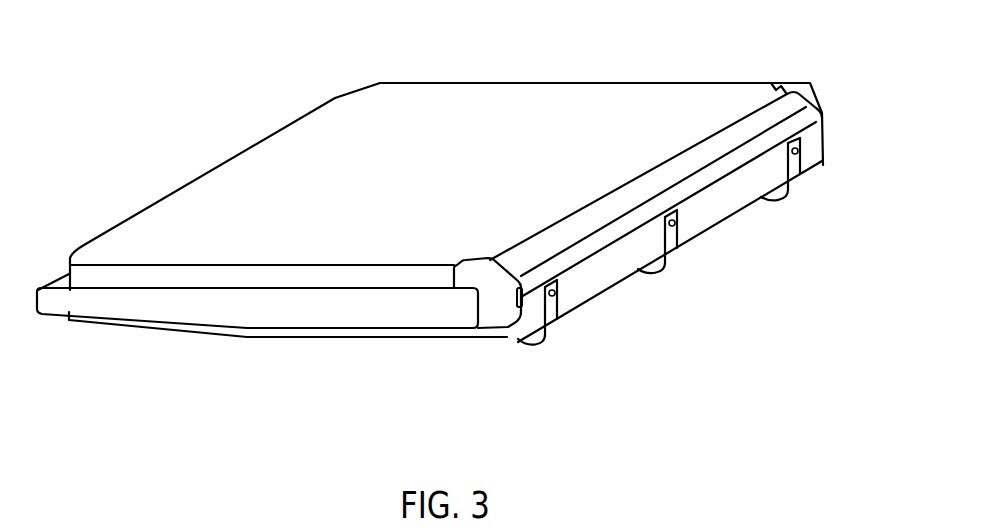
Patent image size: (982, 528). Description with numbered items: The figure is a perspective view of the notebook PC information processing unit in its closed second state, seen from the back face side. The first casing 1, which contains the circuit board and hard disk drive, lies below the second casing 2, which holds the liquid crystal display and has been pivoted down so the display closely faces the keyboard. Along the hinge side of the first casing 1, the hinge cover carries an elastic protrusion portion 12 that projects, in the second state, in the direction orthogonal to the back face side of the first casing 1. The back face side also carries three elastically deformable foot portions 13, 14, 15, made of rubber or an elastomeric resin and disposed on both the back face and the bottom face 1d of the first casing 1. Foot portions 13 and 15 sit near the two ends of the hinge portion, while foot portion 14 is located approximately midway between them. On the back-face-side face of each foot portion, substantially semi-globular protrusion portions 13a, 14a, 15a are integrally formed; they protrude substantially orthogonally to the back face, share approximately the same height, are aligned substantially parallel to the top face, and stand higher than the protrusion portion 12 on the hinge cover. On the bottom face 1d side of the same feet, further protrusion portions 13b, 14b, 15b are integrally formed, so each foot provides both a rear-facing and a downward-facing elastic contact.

The first casing 1 is at (272, 346).
The bottom face 1d is at (267, 342).
The second casing 2 is at (527, 98).
The protrusion portion 12 is at (514, 308).
The foot portion 13 is at (821, 204).
The protrusion portion 13a is at (798, 153).
The protrusion portion 13b is at (773, 201).
The foot portion 14 is at (699, 275).
The protrusion portion 14a is at (675, 224).
The protrusion portion 14b is at (647, 274).
The foot portion 15 is at (577, 347).
The protrusion portion 15a is at (555, 293).
The protrusion portion 15b is at (535, 341).